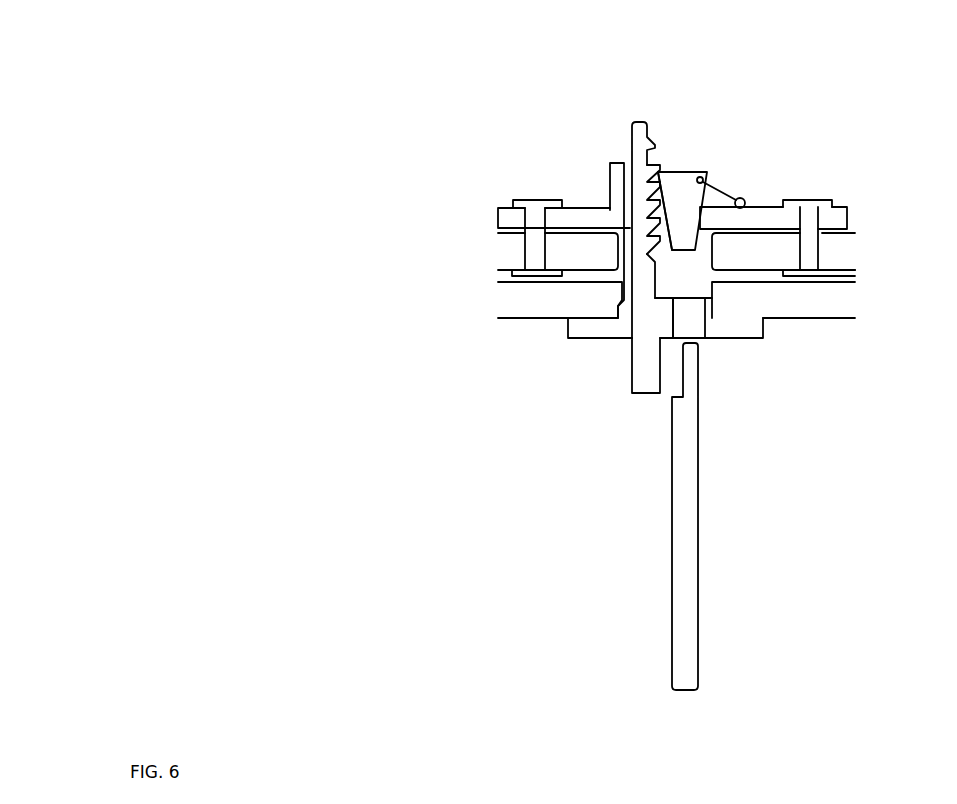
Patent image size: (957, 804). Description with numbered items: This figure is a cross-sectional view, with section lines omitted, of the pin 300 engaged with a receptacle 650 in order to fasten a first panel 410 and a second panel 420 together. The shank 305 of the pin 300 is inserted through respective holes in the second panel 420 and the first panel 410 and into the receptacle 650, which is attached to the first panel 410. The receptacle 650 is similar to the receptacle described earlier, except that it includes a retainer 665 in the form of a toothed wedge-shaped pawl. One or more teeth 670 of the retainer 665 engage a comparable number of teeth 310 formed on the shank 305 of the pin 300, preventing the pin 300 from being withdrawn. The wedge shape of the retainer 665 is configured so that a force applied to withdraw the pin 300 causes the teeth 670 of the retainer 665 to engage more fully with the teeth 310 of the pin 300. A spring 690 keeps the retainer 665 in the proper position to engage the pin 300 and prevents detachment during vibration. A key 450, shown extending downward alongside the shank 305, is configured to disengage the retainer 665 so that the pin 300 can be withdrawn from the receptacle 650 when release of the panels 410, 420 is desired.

The pin 300 is at (615, 403).
The shank 305 is at (630, 126).
The teeth 310 is at (657, 183).
The first panel 410 is at (497, 283).
The second panel 420 is at (505, 318).
The key 450 is at (698, 552).
The receptacle 650 is at (840, 85).
The retainer 665 is at (698, 175).
The teeth 670 is at (662, 185).
The spring 690 is at (742, 198).